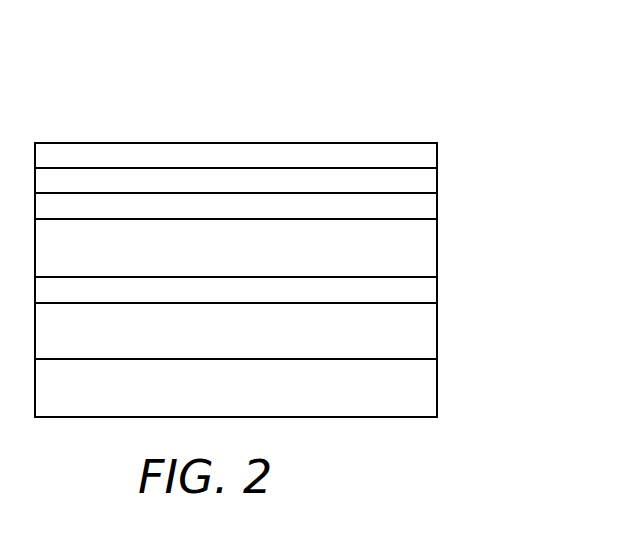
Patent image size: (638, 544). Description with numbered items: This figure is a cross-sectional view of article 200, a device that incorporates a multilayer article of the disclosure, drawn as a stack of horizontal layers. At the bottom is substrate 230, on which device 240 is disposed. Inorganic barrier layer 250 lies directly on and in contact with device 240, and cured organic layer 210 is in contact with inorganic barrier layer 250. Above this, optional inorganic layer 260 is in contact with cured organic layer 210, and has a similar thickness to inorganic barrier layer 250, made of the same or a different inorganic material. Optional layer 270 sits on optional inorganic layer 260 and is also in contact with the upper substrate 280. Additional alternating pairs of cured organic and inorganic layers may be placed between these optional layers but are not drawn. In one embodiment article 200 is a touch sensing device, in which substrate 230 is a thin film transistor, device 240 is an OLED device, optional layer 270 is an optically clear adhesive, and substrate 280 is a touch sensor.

The article 200 is at (410, 83).
The substrate 280 is at (437, 152).
The optional layer 270 is at (437, 178).
The optional inorganic layer 260 is at (442, 212).
The cured organic layer 210 is at (442, 252).
The inorganic barrier layer 250 is at (442, 292).
The device 240 is at (442, 338).
The substrate 230 is at (442, 401).